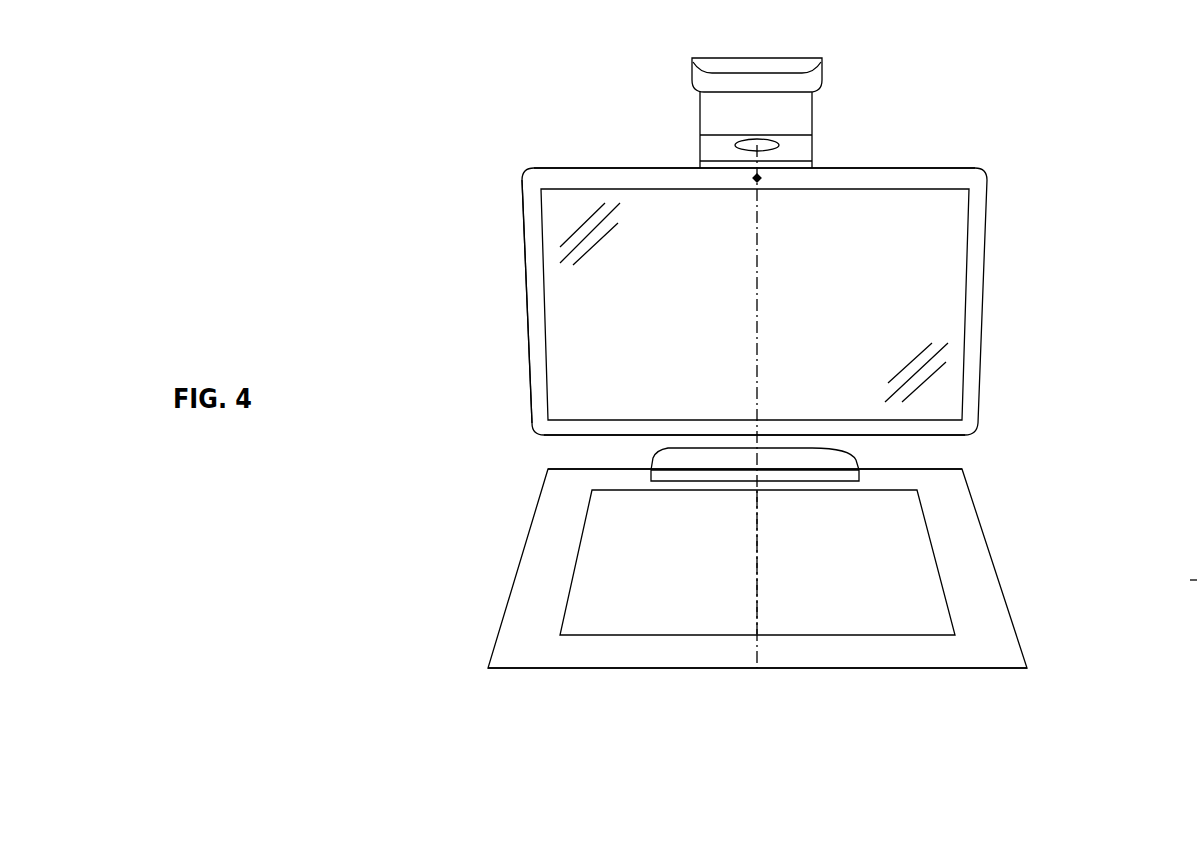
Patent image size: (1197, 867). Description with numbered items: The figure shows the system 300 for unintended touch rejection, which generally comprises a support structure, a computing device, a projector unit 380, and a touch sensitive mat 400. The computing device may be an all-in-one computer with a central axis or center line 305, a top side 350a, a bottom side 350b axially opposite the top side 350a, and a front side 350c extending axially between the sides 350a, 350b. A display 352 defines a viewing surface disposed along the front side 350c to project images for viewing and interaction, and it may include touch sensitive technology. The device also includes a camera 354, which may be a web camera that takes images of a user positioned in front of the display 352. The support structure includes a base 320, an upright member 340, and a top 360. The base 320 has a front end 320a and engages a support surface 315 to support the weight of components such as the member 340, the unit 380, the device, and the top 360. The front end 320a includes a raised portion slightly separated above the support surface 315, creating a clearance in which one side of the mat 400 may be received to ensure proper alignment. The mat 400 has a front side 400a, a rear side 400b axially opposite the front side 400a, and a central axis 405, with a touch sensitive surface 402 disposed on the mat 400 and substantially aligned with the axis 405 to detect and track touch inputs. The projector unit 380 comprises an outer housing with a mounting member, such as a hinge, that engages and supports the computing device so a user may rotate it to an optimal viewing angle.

The system 300 is at (1060, 253).
The central axis 305 is at (757, 220).
The support surface 315 is at (1196, 580).
The base 320 is at (632, 463).
The front end of base 320a is at (685, 494).
The upright member 340 is at (686, 109).
The top side 350a is at (878, 168).
The bottom side 350b is at (915, 440).
The front side 350c is at (545, 302).
The display 352 is at (853, 262).
The camera 354 is at (757, 178).
The top 360 is at (828, 52).
The projector unit 380 is at (686, 154).
The touch sensitive mat 400 is at (965, 612).
The front side of mat 400a is at (900, 667).
The rear side of mat 400b is at (580, 470).
The touch sensitive surface 402 is at (923, 550).
The axis of mat 405 is at (758, 510).